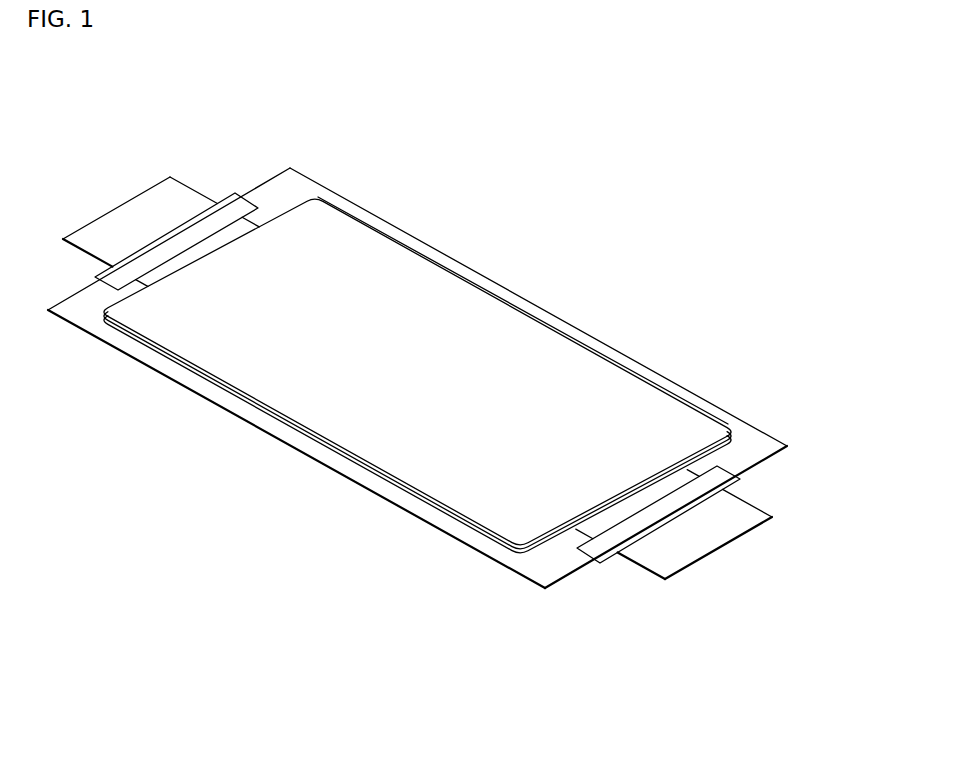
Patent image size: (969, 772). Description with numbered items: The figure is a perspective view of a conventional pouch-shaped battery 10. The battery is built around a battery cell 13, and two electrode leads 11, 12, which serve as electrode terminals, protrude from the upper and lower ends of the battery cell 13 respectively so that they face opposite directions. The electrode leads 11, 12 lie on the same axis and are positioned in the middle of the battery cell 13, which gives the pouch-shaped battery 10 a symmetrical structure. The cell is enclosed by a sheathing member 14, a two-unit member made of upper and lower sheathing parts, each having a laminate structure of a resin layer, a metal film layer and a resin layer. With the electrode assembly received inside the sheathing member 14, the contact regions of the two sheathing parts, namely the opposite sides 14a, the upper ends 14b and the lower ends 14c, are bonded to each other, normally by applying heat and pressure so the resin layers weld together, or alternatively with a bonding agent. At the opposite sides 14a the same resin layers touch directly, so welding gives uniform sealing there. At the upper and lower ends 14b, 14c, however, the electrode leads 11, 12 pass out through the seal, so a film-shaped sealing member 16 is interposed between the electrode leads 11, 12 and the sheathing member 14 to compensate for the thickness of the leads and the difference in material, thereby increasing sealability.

The pouch-shaped battery 10 is at (51, 80).
The electrode lead 11 is at (137, 213).
The electrode lead 12 is at (735, 545).
The battery cell 13 is at (513, 318).
The sheathing member 14 is at (768, 433).
The opposite sides 14a is at (292, 184).
The upper end 14b is at (413, 509).
The lower end 14c is at (562, 562).
The film-shaped sealing member 16 is at (742, 479).